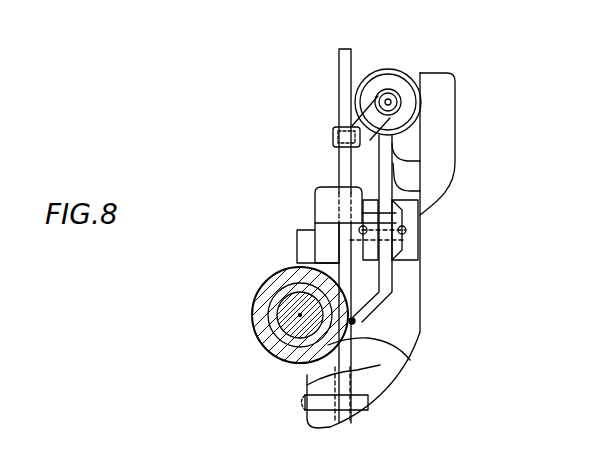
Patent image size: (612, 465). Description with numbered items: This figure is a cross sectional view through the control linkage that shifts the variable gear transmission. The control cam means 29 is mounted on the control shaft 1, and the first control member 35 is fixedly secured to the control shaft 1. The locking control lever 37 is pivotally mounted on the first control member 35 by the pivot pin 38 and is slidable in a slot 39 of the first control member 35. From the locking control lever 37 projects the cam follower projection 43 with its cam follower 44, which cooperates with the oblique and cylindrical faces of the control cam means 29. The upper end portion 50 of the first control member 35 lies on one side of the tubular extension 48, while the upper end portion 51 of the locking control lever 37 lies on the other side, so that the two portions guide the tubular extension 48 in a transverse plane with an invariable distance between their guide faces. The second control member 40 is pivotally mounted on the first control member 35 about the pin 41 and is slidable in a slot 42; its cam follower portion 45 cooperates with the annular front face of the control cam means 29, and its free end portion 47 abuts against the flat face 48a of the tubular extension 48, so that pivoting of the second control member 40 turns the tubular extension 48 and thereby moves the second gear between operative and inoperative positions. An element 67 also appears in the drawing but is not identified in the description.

The control shaft 1 is at (282, 368).
The control cam means 29 is at (272, 331).
The first control member 35 is at (383, 385).
The locking control lever 37 is at (342, 162).
The pivot pin 38 is at (306, 408).
The slot 39 is at (313, 226).
The second control member 40 is at (383, 295).
The pin 41 is at (405, 240).
The slot 42 is at (362, 211).
The cam follower projection 43 is at (338, 253).
The cam follower 44 is at (297, 262).
The cam follower portion 45 is at (355, 321).
The free end portion 47 is at (383, 157).
The tubular extension 48 is at (392, 70).
The flat face 48a is at (428, 152).
The upper end portion 50 is at (445, 85).
The upper end portion 51 is at (348, 57).
The bearing sleeve 67 is at (258, 290).